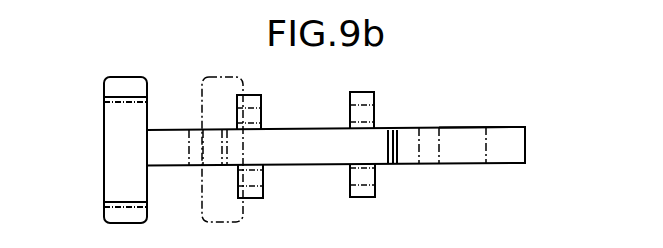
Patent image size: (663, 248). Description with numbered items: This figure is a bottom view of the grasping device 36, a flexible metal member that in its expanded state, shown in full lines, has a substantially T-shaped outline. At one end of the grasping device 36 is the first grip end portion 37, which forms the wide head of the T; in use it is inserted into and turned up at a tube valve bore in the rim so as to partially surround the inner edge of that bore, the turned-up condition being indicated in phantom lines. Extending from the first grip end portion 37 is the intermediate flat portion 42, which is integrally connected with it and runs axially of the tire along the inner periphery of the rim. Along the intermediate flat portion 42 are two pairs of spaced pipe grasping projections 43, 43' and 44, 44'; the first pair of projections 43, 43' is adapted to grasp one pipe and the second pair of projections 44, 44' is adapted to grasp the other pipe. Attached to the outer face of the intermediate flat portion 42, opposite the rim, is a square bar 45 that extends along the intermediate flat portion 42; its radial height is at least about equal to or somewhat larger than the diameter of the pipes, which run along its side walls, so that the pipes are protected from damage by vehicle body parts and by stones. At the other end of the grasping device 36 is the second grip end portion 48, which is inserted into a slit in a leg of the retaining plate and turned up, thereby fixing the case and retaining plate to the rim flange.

The grasping device 36 is at (450, 126).
The first grip end portion 37 is at (108, 110).
The intermediate flat portion 42 is at (313, 157).
The pipe grasping projection 43 is at (386, 104).
The pipe grasping projection 43' is at (276, 105).
The pipe grasping projection 44 is at (369, 201).
The pipe grasping projection 44' is at (262, 202).
The square bar 45 is at (403, 153).
The second grip end portion 48 is at (519, 145).